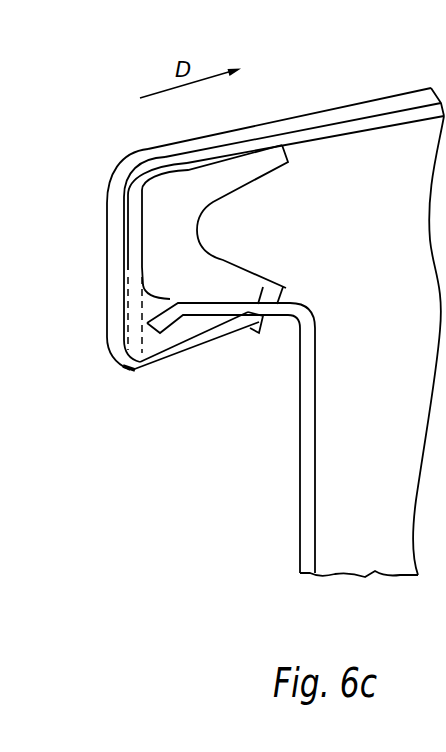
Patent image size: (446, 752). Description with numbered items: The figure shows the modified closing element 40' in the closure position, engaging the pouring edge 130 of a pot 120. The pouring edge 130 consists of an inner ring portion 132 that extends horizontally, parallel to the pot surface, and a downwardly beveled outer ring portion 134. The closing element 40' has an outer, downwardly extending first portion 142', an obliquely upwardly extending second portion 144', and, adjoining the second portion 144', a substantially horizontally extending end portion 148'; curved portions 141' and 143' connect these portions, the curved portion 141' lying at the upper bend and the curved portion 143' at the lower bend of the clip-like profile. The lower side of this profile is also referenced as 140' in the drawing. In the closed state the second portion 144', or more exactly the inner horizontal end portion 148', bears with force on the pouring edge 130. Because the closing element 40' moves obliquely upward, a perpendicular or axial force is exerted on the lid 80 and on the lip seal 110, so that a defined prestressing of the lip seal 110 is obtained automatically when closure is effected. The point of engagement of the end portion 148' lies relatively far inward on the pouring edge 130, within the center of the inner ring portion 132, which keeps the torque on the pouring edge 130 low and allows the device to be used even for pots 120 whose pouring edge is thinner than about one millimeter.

The closing element 40' is at (296, 98).
The lid 80 is at (390, 114).
The lip seal 110 is at (194, 199).
The pot 120 is at (307, 515).
The pouring edge 130 is at (268, 320).
The inner ring portion 132 is at (283, 288).
The outer ring portion 134 is at (145, 356).
The clip 140' is at (82, 268).
The curved portion 141' is at (179, 162).
The first portion 142' is at (109, 271).
The curved portion 143' is at (93, 359).
The second portion 144' is at (195, 379).
The end portion 148' is at (240, 356).